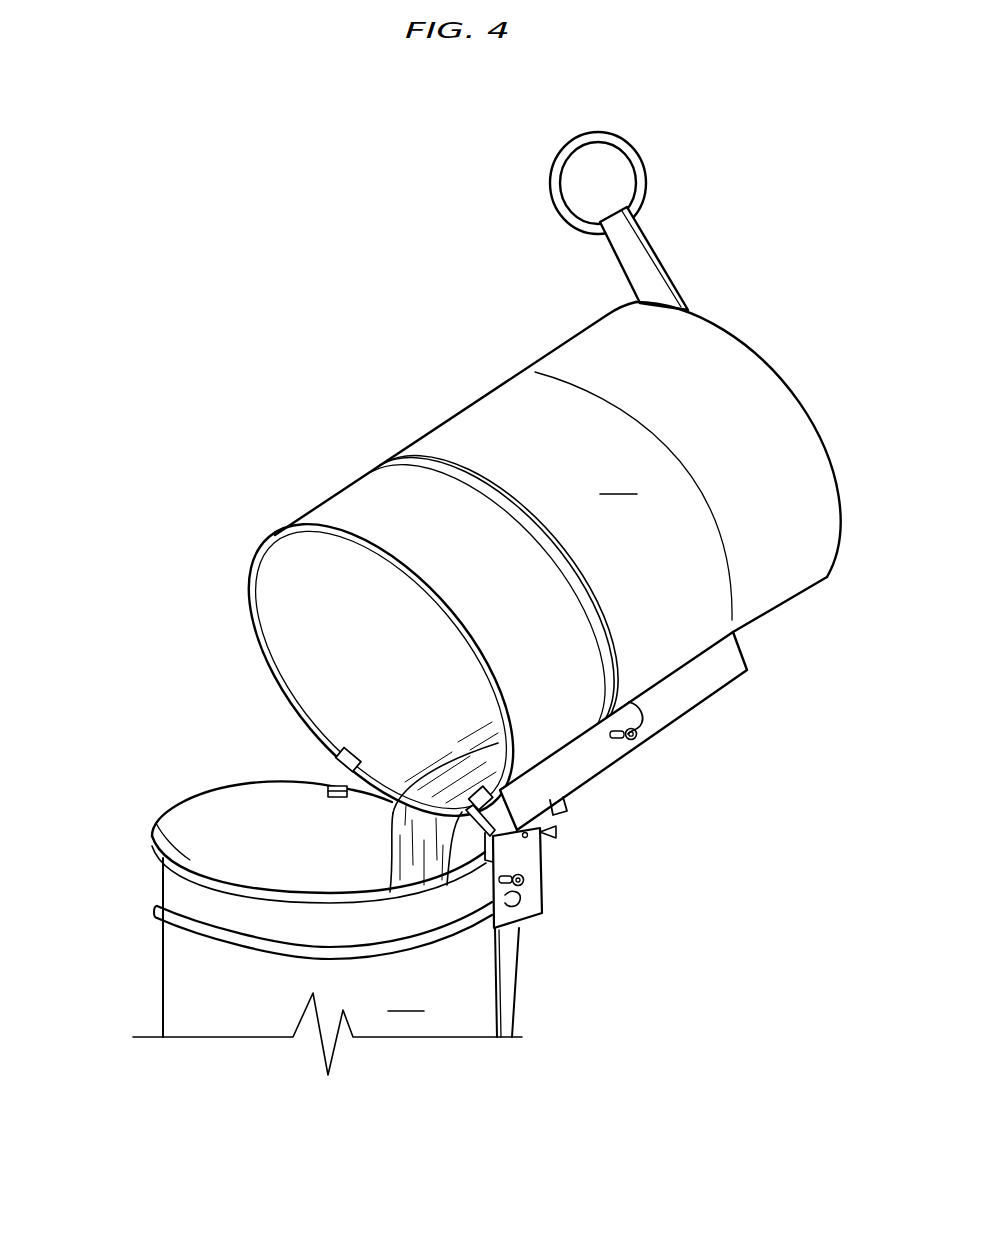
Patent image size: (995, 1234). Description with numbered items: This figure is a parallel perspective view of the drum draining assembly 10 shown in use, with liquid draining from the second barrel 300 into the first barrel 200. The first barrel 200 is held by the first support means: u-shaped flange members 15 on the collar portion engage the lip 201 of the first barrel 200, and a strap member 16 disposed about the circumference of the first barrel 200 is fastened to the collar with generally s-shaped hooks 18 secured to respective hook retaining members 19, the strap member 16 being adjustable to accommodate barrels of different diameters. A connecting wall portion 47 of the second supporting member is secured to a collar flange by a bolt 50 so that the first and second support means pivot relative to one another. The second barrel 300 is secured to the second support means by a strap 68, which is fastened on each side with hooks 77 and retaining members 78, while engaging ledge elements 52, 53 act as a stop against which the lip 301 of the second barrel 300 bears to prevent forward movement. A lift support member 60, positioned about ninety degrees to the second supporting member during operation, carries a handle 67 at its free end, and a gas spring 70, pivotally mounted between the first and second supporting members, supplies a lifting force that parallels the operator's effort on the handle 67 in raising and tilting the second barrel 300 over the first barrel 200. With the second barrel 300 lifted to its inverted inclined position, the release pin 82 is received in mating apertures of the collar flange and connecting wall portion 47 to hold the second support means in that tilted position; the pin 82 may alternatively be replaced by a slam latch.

The drum draining assembly 10 is at (397, 276).
The handle 67 is at (605, 137).
The lift support member 60 is at (653, 242).
The second barrel 300 is at (558, 467).
The strap 68 is at (400, 456).
The lip 301 is at (258, 580).
The connecting wall portion 47 is at (745, 662).
The hook 77 is at (643, 714).
The retaining member 78 is at (637, 745).
The ledge element 53 is at (348, 754).
The ledge element 52 is at (477, 789).
The flange member 15 is at (332, 786).
The lip 201 is at (165, 823).
The first barrel 200 is at (327, 966).
The strap member 16 is at (160, 912).
The s-shaped hook 18 is at (544, 910).
The bolt 50 is at (535, 840).
The release pin 82 is at (558, 832).
The hook retaining member 19 is at (523, 882).
The gas spring 70 is at (503, 950).